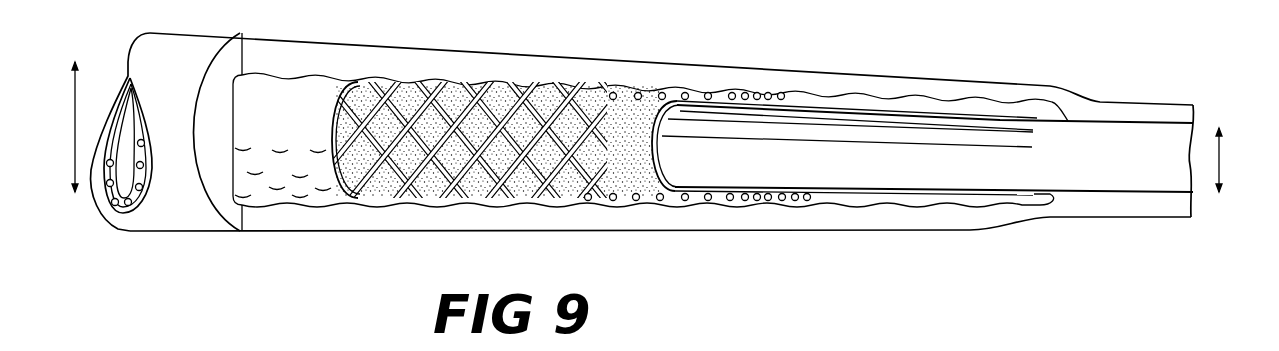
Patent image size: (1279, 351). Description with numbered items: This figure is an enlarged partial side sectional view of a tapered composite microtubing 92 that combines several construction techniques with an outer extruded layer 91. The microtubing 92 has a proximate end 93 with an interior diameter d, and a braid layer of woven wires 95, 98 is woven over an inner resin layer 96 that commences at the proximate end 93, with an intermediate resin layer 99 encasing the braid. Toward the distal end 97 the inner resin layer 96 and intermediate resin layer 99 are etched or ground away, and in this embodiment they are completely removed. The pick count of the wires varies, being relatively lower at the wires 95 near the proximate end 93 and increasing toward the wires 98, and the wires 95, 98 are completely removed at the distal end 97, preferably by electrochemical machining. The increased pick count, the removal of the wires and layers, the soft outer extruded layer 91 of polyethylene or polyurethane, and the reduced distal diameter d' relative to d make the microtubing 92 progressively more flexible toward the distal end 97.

The outer extruded layer 91 is at (188, 80).
The microtubing 92 is at (255, 24).
The proximate end 93 is at (128, 233).
The woven wires 95 is at (397, 193).
The inner resin layer 96 is at (993, 200).
The distal end 97 is at (1197, 104).
The woven wires 98 is at (797, 203).
The intermediate resin layer 99 is at (303, 120).